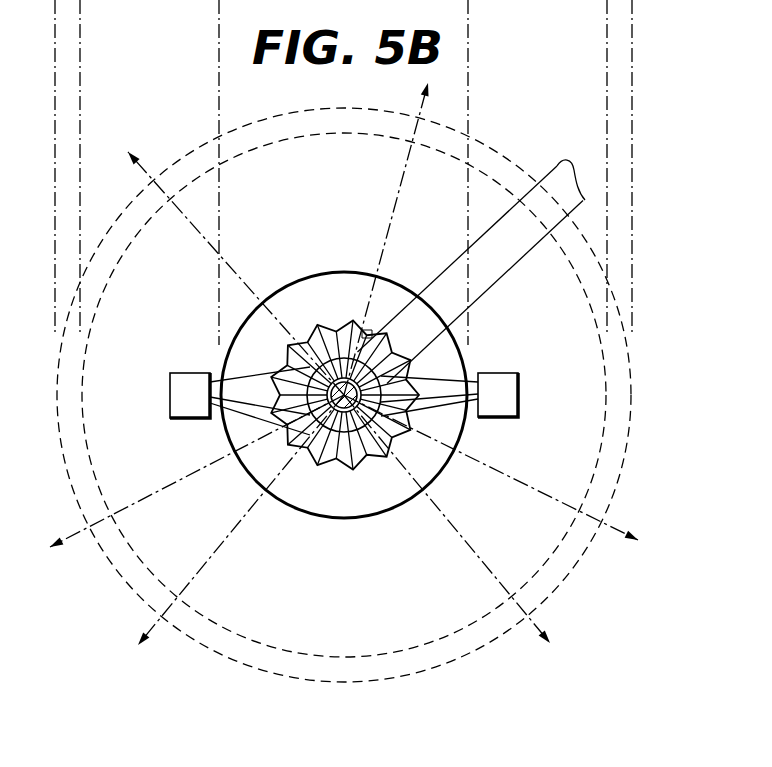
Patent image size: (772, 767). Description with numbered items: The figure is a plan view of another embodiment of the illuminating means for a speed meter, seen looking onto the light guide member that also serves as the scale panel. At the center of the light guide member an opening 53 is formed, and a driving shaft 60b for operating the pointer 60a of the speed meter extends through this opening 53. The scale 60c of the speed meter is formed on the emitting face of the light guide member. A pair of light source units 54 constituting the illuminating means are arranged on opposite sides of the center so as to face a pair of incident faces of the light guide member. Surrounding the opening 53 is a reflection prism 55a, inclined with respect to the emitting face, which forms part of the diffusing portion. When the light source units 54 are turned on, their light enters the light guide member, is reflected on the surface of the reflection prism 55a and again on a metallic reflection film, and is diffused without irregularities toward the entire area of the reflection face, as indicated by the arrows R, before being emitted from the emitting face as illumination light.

The opening 53 is at (358, 450).
The light source unit 54 is at (170, 396).
The reflection prism 55a is at (325, 457).
The pointer 60a is at (487, 230).
The driving shaft 60b is at (327, 322).
The scale 60c is at (650, 368).
The arrows R is at (171, 200).